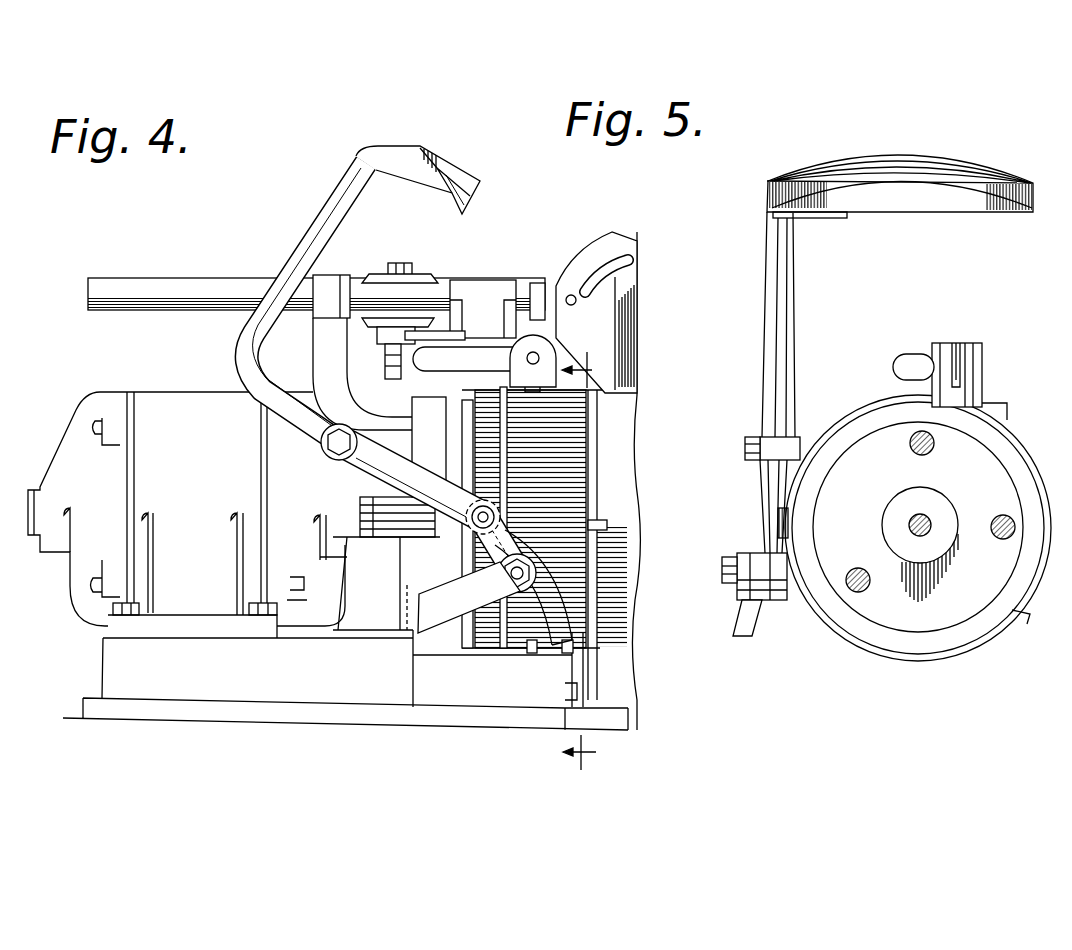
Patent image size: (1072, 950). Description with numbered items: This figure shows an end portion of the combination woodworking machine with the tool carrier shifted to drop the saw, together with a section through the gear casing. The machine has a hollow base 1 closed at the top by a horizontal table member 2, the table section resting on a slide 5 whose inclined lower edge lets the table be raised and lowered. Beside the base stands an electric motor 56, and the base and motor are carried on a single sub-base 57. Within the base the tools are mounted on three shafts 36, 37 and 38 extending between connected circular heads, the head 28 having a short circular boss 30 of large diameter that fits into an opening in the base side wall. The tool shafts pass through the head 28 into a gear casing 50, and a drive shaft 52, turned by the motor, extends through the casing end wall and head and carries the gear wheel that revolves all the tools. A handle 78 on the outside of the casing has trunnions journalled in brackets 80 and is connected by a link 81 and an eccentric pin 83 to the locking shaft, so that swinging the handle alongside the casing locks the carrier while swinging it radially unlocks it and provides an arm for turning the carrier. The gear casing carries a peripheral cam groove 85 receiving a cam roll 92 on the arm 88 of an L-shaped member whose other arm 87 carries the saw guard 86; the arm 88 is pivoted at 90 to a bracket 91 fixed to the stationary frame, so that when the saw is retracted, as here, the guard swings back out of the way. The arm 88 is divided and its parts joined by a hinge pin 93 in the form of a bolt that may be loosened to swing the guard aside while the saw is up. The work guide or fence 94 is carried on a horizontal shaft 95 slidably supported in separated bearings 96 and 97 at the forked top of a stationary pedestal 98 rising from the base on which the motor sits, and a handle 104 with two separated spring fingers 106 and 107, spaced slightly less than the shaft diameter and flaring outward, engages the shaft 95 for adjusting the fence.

In FIG. 4, the hollow base 1 is at (618, 615).
In FIG. 4, the table member 2 is at (622, 386).
In FIG. 4, the slide 5 is at (579, 570).
In FIG. 5, the circular head 28 is at (973, 464).
In FIG. 5, the circular boss 30 is at (1016, 582).
In FIG. 5, the tool shaft 36 is at (857, 568).
In FIG. 5, the tool shaft 37 is at (997, 518).
In FIG. 5, the tool shaft 38 is at (908, 446).
In FIG. 4, the gear casing 50 is at (567, 511).
In FIG. 5, the gear casing 50 is at (1040, 472).
In FIG. 4, the drive shaft 52 is at (365, 527).
In FIG. 5, the drive shaft 52 is at (925, 520).
In FIG. 4, the electric motor 56 is at (220, 545).
In FIG. 4, the sub-base 57 is at (490, 712).
In FIG. 4, the handle 78 is at (469, 359).
In FIG. 5, the handle 78 is at (910, 365).
In FIG. 4, the bracket 80 is at (536, 355).
In FIG. 5, the bracket 80 is at (983, 368).
In FIG. 5, the link 81 is at (960, 347).
In FIG. 4, the pin 83 is at (606, 302).
In FIG. 4, the cam groove 85 is at (487, 458).
In FIG. 4, the guard 86 is at (470, 172).
In FIG. 5, the guard 86 is at (940, 198).
In FIG. 4, the arm 87 is at (320, 220).
In FIG. 5, the arm 87 is at (788, 320).
In FIG. 4, the arm 88 is at (356, 477).
In FIG. 5, the arm 88 is at (762, 498).
In FIG. 4, the pivot 90 is at (510, 574).
In FIG. 5, the pivot 90 is at (728, 578).
In FIG. 4, the bracket 91 is at (420, 604).
In FIG. 5, the bracket 91 is at (736, 624).
In FIG. 4, the cam roll 92 is at (498, 508).
In FIG. 5, the cam roll 92 is at (792, 502).
In FIG. 4, the hinge pin 93 is at (338, 450).
In FIG. 5, the hinge pin 93 is at (745, 447).
In FIG. 4, the work guide 94 is at (628, 330).
In FIG. 4, the horizontal shaft 95 is at (160, 290).
In FIG. 4, the bearing 96 is at (484, 290).
In FIG. 4, the bearing 97 is at (340, 280).
In FIG. 4, the pedestal 98 is at (388, 432).
In FIG. 4, the handle 104 is at (415, 336).
In FIG. 4, the spring finger 106 is at (425, 276).
In FIG. 4, the spring finger 107 is at (384, 334).